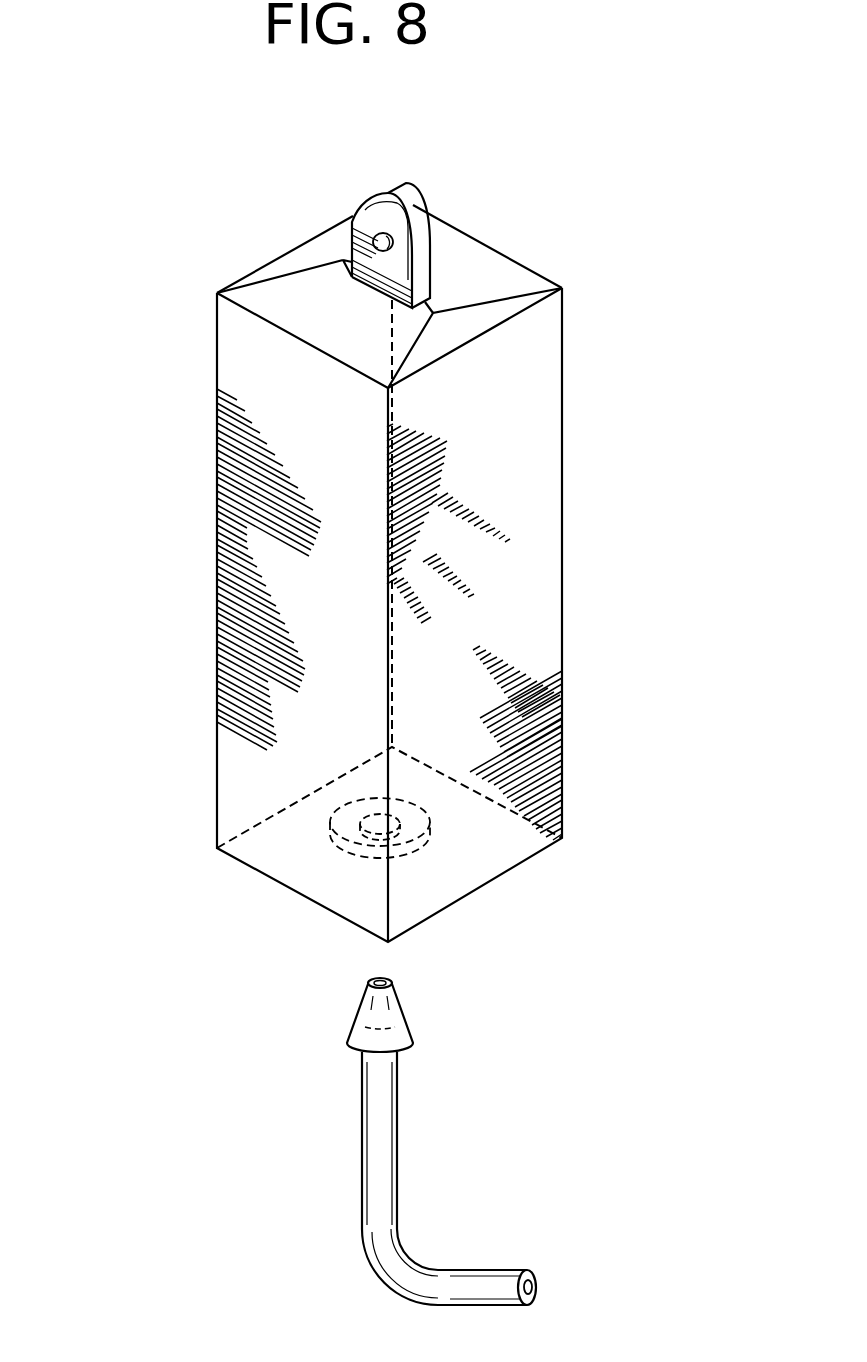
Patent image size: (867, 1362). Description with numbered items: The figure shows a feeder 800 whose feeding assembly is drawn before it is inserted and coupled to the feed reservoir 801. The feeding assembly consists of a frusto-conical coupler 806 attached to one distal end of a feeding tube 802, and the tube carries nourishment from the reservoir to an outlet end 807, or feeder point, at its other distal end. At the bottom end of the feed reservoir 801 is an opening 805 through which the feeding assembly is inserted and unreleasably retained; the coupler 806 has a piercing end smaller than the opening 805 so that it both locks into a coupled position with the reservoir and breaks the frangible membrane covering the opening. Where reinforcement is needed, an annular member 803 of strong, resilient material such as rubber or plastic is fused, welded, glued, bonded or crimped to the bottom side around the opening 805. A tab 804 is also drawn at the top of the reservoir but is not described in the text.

The feeder 800 is at (645, 247).
The feed reservoir 801 is at (217, 465).
The feeding tube 802 is at (378, 1160).
The annular member 803 is at (330, 837).
The hanging tab 804 is at (407, 217).
The opening 805 is at (373, 867).
The coupler 806 is at (399, 1010).
The outlet end 807 is at (537, 1283).